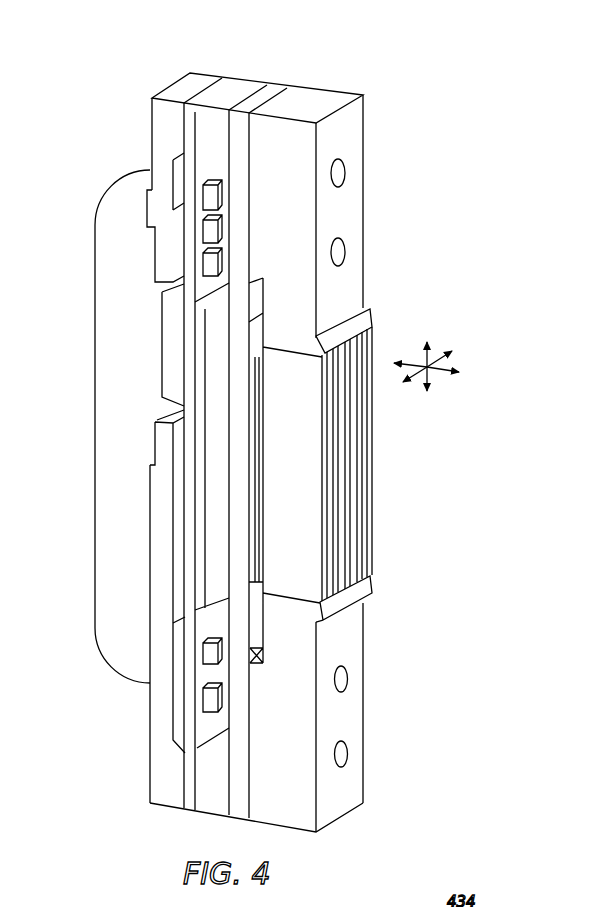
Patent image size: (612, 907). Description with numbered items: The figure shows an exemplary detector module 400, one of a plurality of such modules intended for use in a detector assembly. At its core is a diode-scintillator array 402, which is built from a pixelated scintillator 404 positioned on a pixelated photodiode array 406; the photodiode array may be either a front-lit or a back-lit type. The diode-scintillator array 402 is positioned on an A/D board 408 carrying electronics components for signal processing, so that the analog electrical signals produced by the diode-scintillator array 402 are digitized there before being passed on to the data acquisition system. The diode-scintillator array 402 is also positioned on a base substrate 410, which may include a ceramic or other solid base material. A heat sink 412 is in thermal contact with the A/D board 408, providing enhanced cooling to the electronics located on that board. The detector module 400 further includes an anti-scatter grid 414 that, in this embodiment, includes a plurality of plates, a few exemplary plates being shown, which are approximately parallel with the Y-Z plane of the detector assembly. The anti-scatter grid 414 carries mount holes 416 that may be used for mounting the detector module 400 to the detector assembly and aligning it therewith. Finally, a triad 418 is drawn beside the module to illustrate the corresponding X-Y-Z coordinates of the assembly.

The detector module 400 is at (372, 49).
The diode-scintillator array 402 is at (222, 359).
The pixelated scintillator 404 is at (252, 492).
The pixelated photodiode array 406 is at (257, 588).
The A/D board 408 is at (172, 596).
The base substrate 410 is at (242, 133).
The heat sink 412 is at (107, 341).
The anti-scatter grid 414 is at (396, 478).
The mount holes 416 is at (348, 754).
The triad 418 is at (434, 312).